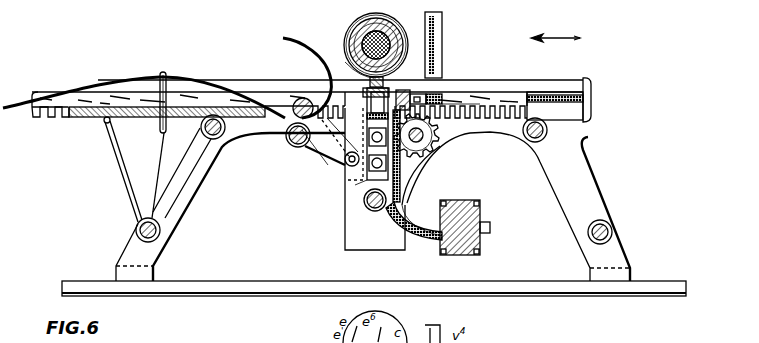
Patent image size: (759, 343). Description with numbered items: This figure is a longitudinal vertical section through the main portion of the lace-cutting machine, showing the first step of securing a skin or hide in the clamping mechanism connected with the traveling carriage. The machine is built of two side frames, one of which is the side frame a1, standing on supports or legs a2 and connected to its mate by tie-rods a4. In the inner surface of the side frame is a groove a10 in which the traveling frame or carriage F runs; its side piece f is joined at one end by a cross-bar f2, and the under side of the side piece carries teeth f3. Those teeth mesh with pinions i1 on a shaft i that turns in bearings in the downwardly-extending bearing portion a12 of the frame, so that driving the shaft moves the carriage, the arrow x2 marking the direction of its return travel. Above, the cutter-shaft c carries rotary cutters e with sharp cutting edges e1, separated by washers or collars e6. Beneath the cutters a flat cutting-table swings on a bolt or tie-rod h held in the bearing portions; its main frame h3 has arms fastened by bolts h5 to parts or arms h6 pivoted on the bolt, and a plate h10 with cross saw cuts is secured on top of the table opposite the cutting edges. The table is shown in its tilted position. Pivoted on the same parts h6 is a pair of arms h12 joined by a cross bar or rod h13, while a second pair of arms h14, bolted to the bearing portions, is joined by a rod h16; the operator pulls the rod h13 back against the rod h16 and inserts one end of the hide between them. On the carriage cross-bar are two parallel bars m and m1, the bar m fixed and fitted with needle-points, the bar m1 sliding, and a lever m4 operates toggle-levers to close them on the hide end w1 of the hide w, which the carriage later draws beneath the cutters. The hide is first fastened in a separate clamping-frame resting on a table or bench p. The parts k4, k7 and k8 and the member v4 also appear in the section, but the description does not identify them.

The side frame a1 is at (570, 78).
The support or leg a2 is at (367, 199).
The tie-rod a4 is at (136, 232).
The groove a10 is at (574, 108).
The downwardly-extending bearing portion a12 is at (348, 233).
The traveling frame or carriage F is at (66, 92).
The side piece f is at (488, 100).
The cross-bar f2 is at (405, 88).
The teeth f3 is at (56, 118).
The table or bench p is at (142, 119).
The hide w is at (229, 88).
The end of the hide w1 is at (318, 88).
The cutter e is at (376, 43).
The cutting edge e1 is at (368, 34).
The washer or collar e6 is at (379, 44).
The cutter-shaft c is at (376, 39).
The bolt or tie-rod h is at (375, 210).
The main frame of the cutting-table h3 is at (367, 97).
The bolt h5 is at (366, 170).
The part or arm h6 is at (358, 186).
The plate h10 is at (346, 61).
The arm h12 is at (308, 154).
The cross bar or rod h13 is at (304, 98).
The arm h14 is at (316, 148).
The cross bar or rod h16 is at (289, 141).
The shaft i is at (432, 151).
The pinion i1 is at (440, 146).
The curved arm k4 is at (408, 179).
The arm band k7 is at (431, 236).
The block k8 is at (484, 219).
The bar m is at (398, 82).
The bar m1 is at (421, 88).
The lever m4 is at (474, 74).
The vertical plate v4 is at (444, 28).
The arrow x2 is at (553, 30).